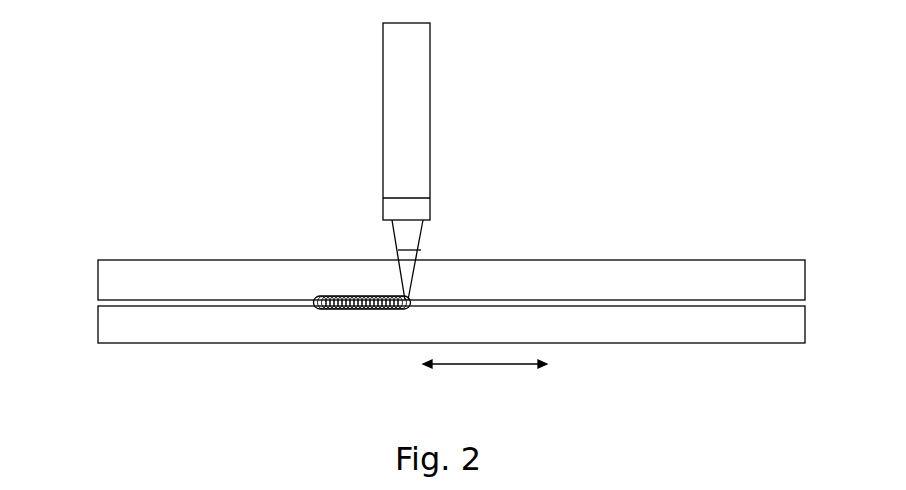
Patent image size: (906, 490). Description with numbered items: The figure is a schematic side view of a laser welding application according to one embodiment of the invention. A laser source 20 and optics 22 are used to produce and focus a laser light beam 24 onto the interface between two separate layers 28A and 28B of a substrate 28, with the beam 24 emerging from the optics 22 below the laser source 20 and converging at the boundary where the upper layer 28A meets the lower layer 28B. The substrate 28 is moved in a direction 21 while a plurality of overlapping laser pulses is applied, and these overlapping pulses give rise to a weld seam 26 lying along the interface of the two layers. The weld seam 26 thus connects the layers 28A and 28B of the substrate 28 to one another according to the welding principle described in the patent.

The laser source 20 is at (412, 113).
The direction 21 is at (485, 364).
The optics 22 is at (432, 220).
The laser light beam 24 is at (421, 250).
The weld seam 26 is at (390, 266).
The substrate 28 is at (412, 256).
The layer 28A is at (628, 327).
The layer 28B is at (675, 285).